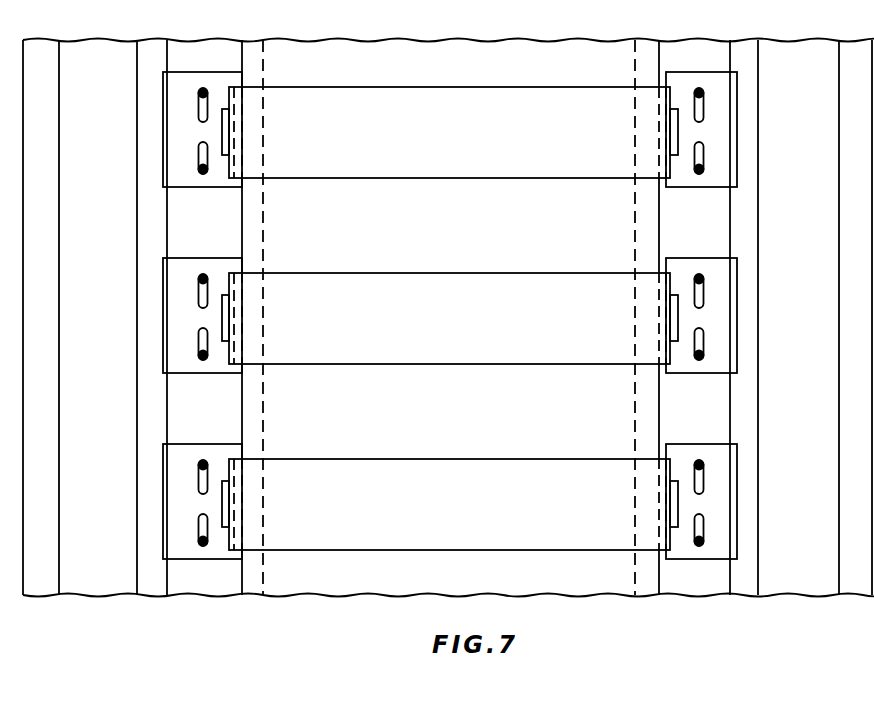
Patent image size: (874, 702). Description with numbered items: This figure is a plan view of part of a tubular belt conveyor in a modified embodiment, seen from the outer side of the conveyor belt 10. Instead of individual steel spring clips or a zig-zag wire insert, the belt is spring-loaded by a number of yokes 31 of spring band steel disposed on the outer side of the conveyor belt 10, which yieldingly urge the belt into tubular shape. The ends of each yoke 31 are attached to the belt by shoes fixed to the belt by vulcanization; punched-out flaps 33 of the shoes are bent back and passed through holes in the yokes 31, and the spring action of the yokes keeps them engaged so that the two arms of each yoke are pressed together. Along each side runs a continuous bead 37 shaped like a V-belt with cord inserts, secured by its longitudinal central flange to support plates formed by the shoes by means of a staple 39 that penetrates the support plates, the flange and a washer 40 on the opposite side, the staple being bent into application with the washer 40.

The conveyor belt 10 is at (317, 577).
The yoke 31 is at (532, 287).
The punched-out flap 33 is at (678, 318).
The continuous bead 37 is at (87, 575).
The staple 39 is at (700, 153).
The washer 40 is at (713, 365).